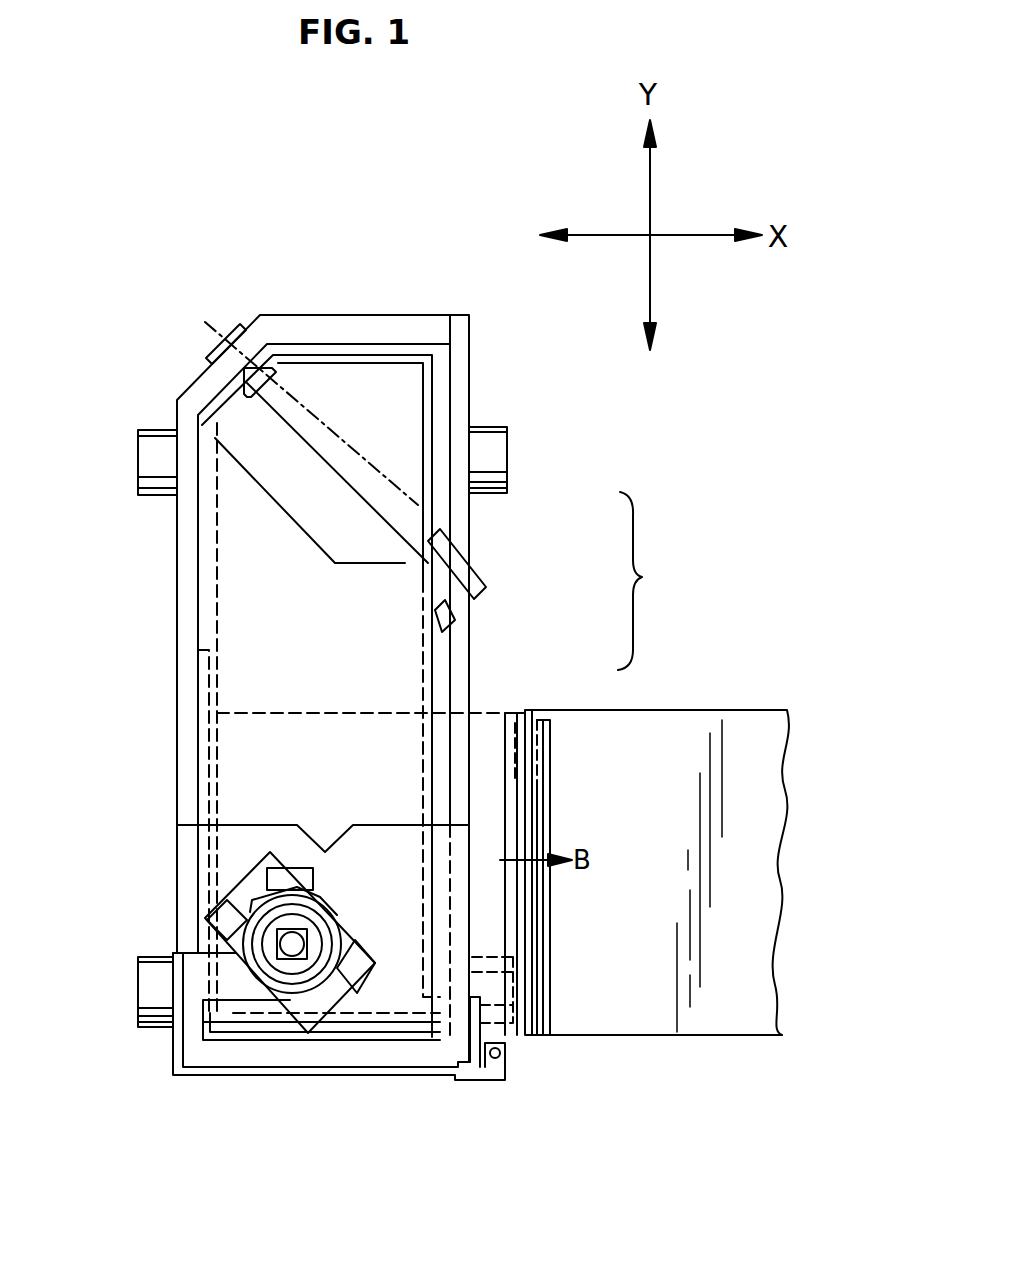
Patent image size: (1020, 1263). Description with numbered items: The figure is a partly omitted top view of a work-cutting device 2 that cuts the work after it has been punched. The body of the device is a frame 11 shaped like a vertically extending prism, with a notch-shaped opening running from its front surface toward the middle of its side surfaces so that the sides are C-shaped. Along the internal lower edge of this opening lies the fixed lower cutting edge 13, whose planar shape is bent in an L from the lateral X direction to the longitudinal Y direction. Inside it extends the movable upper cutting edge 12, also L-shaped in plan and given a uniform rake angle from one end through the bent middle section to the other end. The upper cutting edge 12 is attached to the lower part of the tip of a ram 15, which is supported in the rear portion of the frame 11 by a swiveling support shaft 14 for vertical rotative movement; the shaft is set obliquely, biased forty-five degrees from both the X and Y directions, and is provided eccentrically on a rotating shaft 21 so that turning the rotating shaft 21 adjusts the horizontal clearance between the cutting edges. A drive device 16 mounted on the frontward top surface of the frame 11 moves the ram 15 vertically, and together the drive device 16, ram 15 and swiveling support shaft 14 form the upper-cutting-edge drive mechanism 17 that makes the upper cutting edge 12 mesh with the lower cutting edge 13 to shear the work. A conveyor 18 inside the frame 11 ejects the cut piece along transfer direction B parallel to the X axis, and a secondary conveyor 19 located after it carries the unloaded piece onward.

The work-cutting device 2 is at (162, 376).
The frame 11 is at (177, 628).
The upper cutting edge 12 is at (258, 1040).
The lower cutting edge 13 is at (222, 1040).
The swiveling support shaft 14 is at (372, 500).
The ram 15 is at (470, 637).
The drive device 16 is at (340, 917).
The upper-cutting-edge drive mechanism 17 is at (647, 581).
The conveyor 18 is at (507, 773).
The secondary conveyor 19 is at (745, 785).
The rotating shaft 21 is at (237, 330).